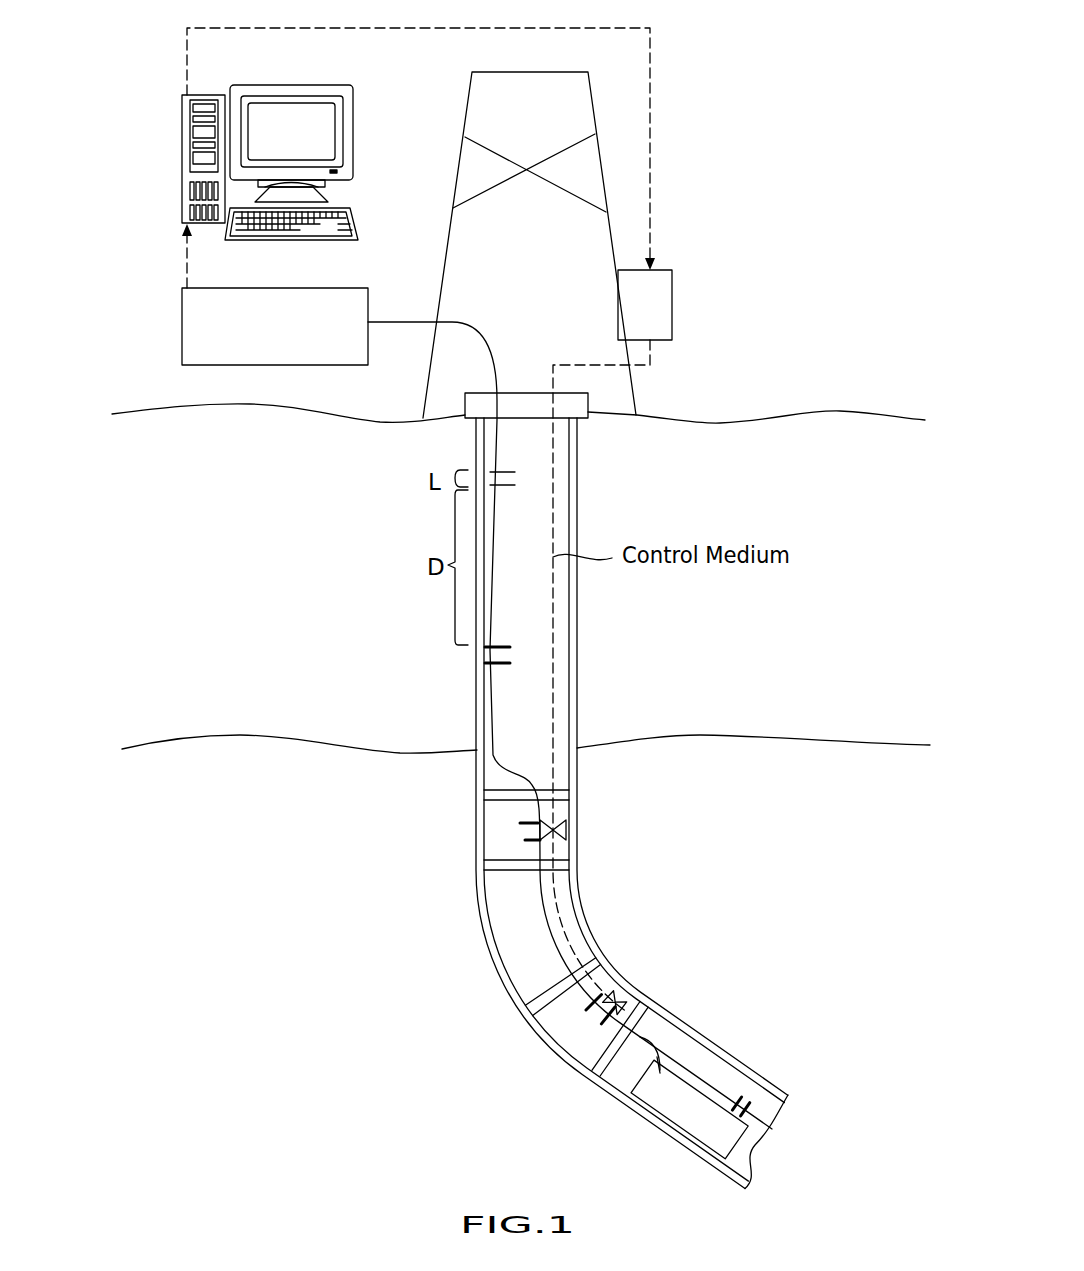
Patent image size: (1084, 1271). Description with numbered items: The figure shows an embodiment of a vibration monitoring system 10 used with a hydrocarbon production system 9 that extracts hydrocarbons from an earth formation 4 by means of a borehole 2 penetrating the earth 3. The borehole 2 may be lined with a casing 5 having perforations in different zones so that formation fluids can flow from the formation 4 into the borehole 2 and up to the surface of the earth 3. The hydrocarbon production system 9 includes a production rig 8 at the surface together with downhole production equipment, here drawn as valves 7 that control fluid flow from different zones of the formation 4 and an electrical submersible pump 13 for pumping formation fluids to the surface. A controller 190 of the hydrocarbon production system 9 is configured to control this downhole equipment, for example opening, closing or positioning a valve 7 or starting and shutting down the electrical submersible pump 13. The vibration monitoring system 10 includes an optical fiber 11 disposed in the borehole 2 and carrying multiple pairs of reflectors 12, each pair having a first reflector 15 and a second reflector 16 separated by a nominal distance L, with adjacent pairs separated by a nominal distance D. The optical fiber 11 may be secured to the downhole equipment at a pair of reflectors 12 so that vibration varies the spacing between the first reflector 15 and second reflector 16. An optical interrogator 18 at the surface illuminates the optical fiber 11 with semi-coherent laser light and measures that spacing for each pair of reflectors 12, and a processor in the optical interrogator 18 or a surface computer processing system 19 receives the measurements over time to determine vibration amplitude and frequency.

The borehole 2 is at (573, 476).
The earth 3 is at (270, 450).
The earth formation 4 is at (268, 782).
The casing 5 is at (573, 519).
The valve 7 is at (566, 830).
The production rig 8 is at (462, 118).
The hydrocarbon production system 9 is at (662, 164).
The vibration monitoring system 10 is at (173, 305).
The optical fiber 11 is at (470, 322).
The pair of reflectors 12 is at (483, 656).
The electrical submersible pump 13 is at (662, 1067).
The first reflector 15 is at (510, 648).
The second reflector 16 is at (510, 663).
The optical interrogator 18 is at (357, 357).
The surface computer processing system 19 is at (182, 122).
The controller 190 is at (672, 302).